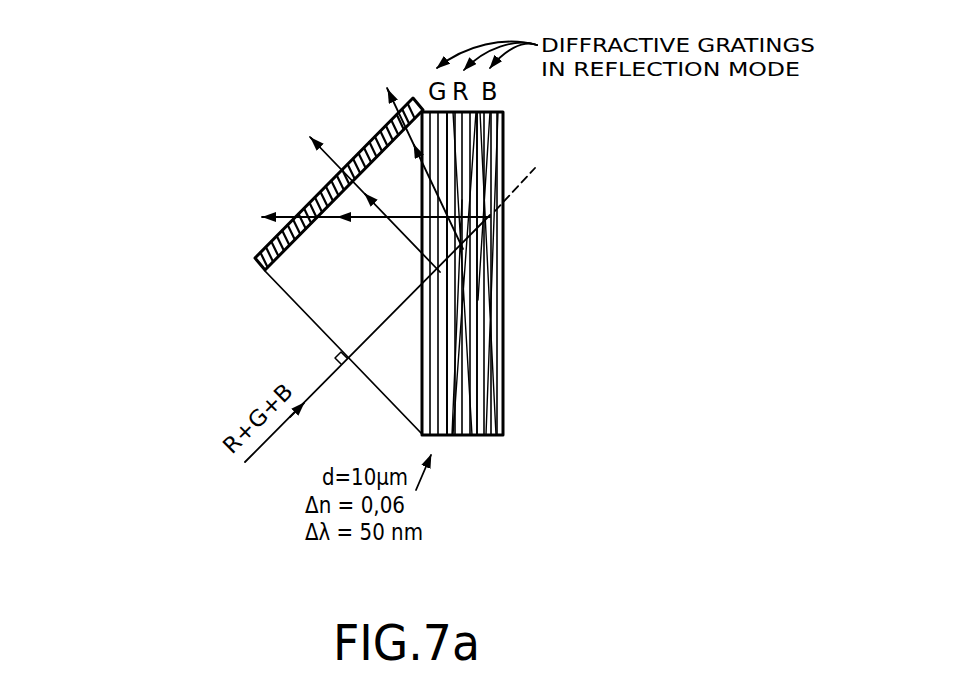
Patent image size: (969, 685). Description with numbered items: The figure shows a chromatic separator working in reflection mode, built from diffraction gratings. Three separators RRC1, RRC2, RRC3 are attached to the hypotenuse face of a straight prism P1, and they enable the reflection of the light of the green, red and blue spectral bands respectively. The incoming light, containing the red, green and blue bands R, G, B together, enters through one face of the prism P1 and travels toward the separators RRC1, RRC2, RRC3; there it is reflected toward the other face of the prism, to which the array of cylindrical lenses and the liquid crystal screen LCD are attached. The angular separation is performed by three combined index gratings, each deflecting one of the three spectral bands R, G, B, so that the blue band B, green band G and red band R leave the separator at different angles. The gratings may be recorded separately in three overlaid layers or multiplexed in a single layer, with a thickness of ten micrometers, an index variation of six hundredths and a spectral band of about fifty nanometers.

The liquid crystal screen LCD is at (252, 260).
The separator RRC1 is at (435, 437).
The separator RRC2 is at (468, 437).
The separator RRC3 is at (503, 422).
The straight prism P1 is at (318, 302).
The blue spectral band B is at (367, 205).
The green spectral band G is at (369, 184).
The red spectral band R is at (416, 147).